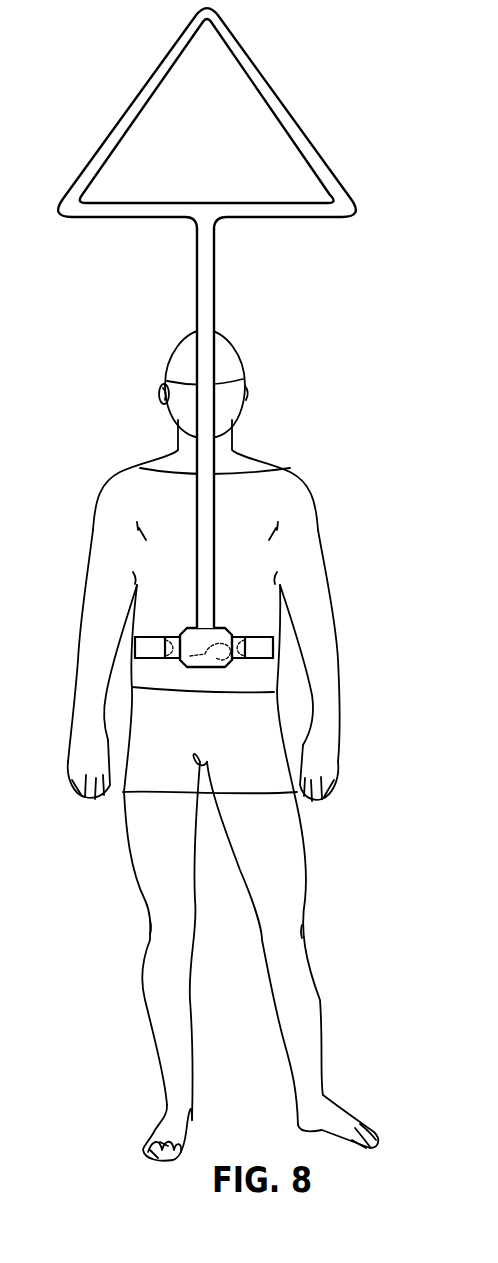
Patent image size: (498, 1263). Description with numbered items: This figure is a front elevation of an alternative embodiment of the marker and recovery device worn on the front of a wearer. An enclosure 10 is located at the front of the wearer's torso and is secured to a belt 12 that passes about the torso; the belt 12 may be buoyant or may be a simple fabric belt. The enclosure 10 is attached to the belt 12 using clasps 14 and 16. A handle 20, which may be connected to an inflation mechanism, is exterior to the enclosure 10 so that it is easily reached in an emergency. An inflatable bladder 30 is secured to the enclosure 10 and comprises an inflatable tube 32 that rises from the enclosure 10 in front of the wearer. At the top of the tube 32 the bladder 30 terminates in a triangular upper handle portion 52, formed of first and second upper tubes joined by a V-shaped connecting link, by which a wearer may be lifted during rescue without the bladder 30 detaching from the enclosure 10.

The enclosure 10 is at (217, 651).
The belt 12 is at (138, 643).
The clasp 14 is at (167, 660).
The clasp 16 is at (242, 640).
The handle 20 is at (217, 660).
The inflatable bladder 30 is at (207, 318).
The inflatable tube 32 is at (203, 530).
The triangular handle portion 52 is at (307, 147).